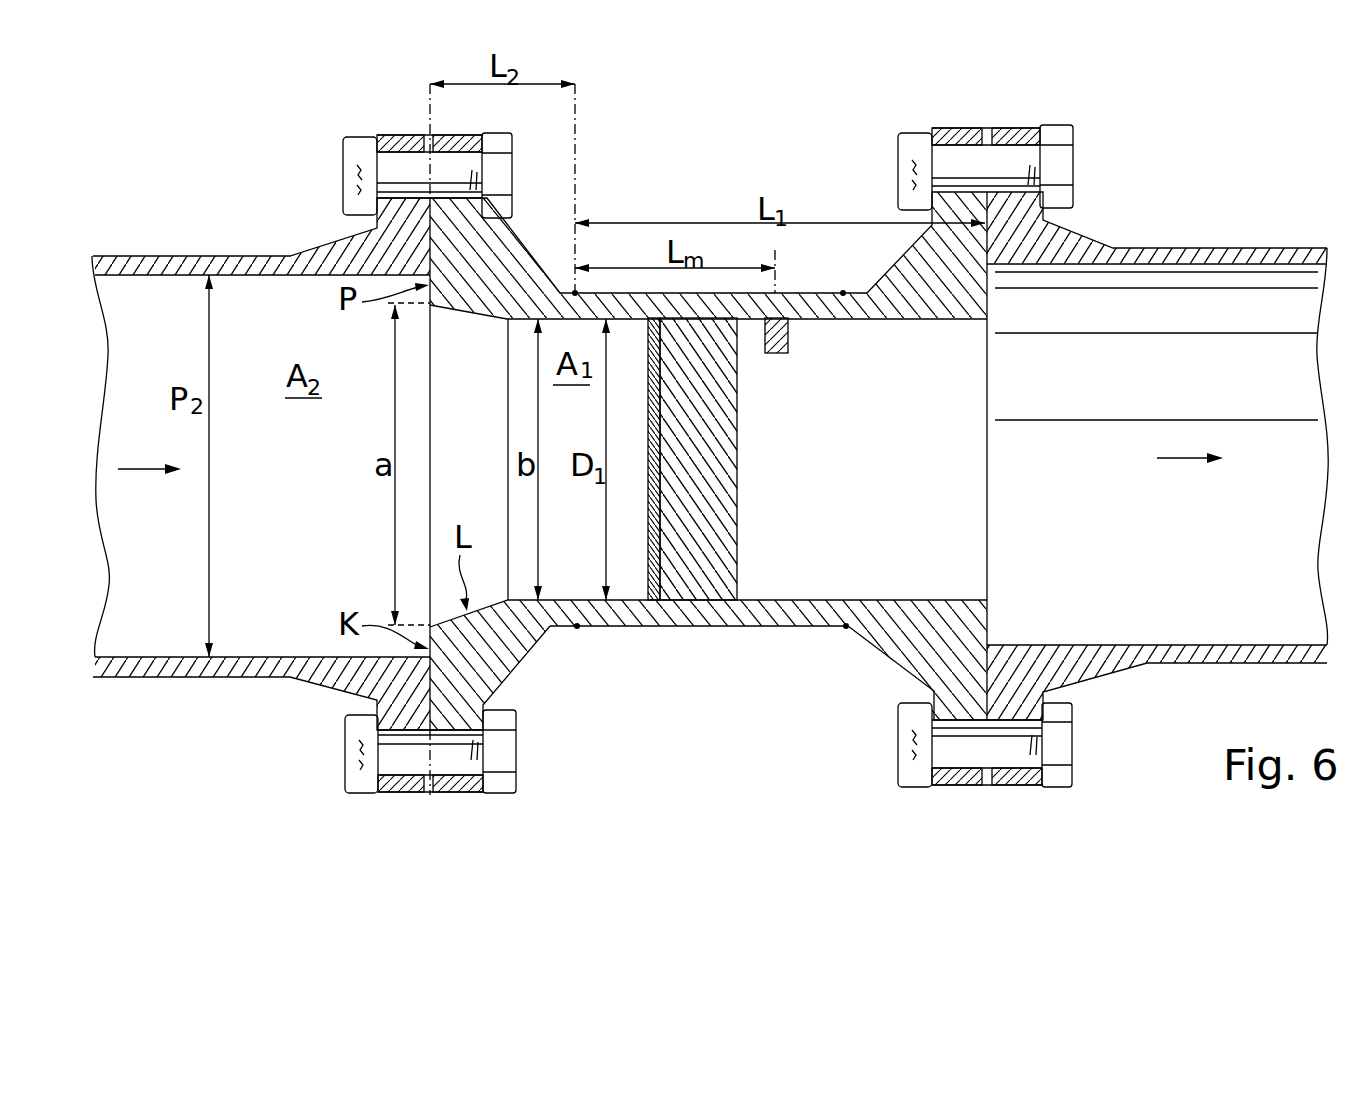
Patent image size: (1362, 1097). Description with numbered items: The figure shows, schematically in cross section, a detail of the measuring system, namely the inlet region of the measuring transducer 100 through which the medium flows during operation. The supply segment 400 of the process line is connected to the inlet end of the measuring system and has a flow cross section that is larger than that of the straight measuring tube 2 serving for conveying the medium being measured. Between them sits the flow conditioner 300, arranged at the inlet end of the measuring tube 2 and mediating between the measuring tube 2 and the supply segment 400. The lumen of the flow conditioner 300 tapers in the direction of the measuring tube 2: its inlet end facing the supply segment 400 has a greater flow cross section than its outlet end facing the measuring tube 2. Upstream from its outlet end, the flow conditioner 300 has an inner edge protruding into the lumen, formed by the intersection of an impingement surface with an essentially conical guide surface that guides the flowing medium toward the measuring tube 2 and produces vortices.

The measuring tube 2 is at (787, 612).
The measuring transducer 100 is at (708, 503).
The flow conditioner 300 is at (505, 653).
The supply segment 400 is at (162, 677).